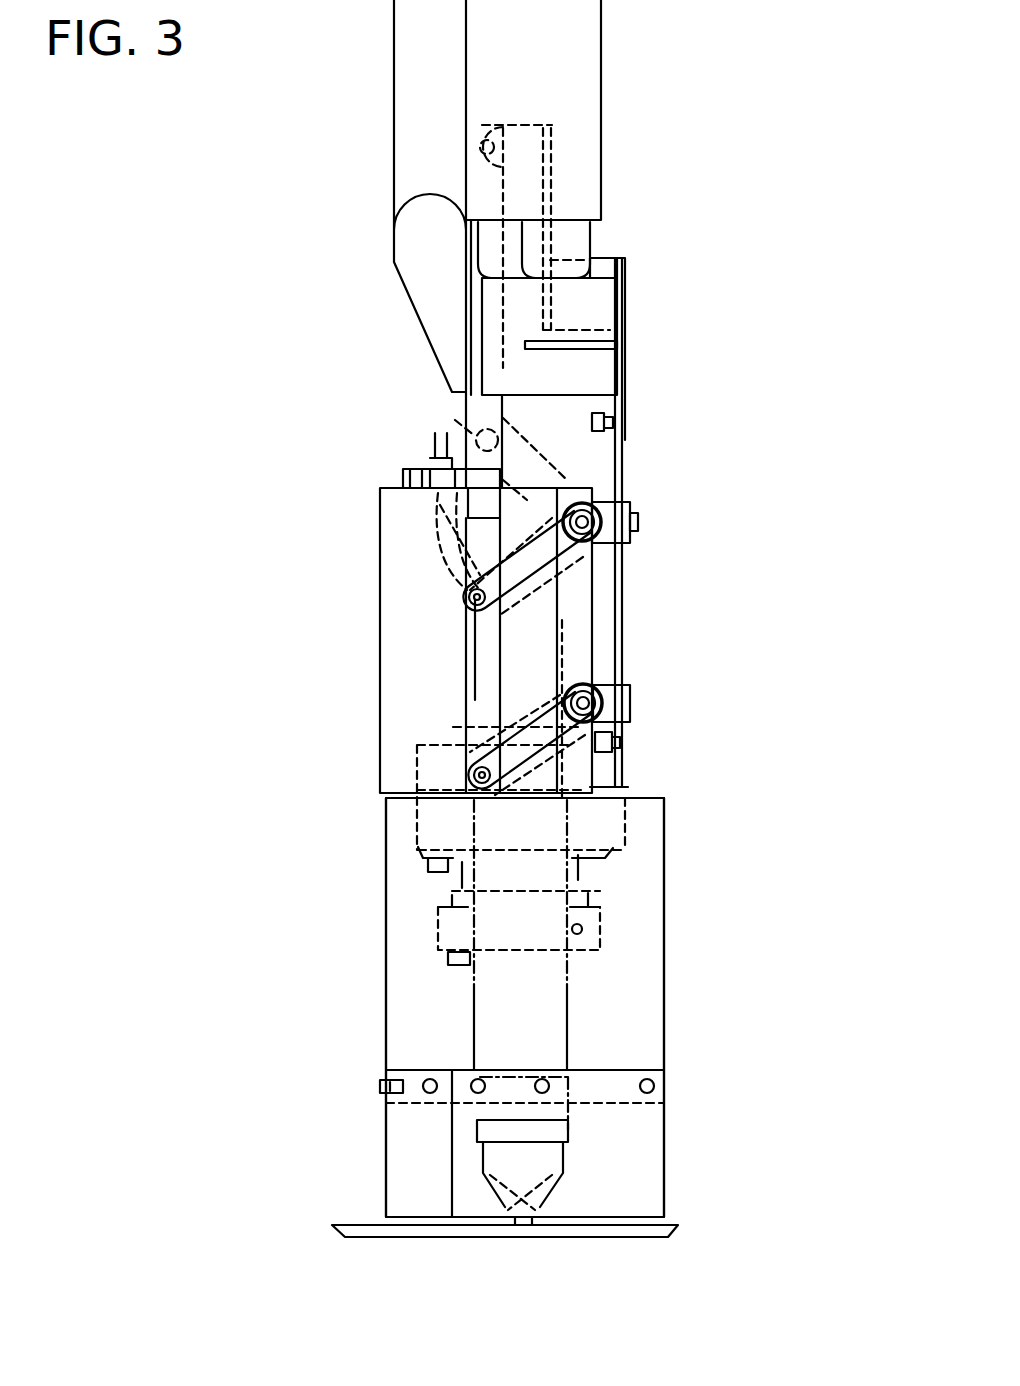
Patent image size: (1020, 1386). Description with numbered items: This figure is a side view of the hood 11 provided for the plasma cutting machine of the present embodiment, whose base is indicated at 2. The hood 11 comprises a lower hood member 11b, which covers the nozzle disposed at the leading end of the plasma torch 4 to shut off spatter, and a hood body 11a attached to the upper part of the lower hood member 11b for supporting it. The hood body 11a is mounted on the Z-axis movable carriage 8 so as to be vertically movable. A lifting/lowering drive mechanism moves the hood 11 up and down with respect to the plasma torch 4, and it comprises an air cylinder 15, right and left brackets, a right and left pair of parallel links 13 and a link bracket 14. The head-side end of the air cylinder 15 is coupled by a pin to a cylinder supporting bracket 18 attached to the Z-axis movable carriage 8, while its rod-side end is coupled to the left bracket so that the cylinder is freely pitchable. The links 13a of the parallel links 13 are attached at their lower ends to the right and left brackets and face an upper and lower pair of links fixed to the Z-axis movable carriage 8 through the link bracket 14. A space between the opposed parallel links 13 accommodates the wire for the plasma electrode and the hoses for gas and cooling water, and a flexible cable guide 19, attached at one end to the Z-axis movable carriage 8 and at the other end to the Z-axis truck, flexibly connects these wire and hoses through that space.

The base plate 2 is at (343, 1225).
The plasma torch 4 is at (483, 1237).
The Z-axis movable carriage 8 is at (597, 371).
The hood 11 is at (835, 970).
The hood body 11a is at (640, 990).
The lower hood member 11b is at (650, 1148).
The parallel links 13 is at (455, 662).
The link 13a is at (460, 717).
The link bracket 14 is at (622, 476).
The air cylinder 15 is at (469, 408).
The cylinder supporting bracket 18 is at (552, 125).
The flexible cable guide 19 is at (418, 128).